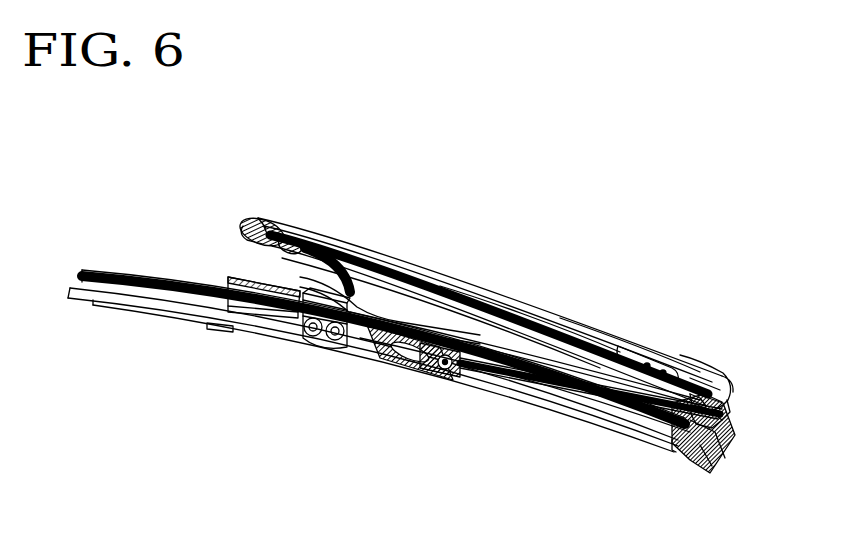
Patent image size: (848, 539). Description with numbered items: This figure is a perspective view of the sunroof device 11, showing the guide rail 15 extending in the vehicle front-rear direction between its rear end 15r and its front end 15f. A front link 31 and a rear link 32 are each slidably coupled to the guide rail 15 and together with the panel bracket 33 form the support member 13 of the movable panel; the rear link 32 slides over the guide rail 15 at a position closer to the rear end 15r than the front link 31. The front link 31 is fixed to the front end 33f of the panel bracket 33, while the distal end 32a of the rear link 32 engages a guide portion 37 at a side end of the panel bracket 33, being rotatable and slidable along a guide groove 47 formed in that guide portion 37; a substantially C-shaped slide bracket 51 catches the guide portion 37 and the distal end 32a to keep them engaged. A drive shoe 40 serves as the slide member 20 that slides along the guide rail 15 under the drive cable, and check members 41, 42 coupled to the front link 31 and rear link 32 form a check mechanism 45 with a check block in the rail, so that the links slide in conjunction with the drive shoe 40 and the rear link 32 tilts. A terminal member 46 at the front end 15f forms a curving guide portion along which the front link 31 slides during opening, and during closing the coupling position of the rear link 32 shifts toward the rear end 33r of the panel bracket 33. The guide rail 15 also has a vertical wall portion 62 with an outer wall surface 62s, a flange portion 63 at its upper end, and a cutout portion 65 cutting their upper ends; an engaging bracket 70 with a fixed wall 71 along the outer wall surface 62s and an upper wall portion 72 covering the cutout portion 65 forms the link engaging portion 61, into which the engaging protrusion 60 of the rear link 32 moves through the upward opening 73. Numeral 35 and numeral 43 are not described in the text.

The sunroof device 11 is at (133, 410).
The guide rail 15 is at (361, 330).
The rear end of the guide rail 15r is at (103, 268).
The front end of the guide rail 15f is at (670, 448).
The slide bracket 51 is at (197, 225).
The distal end of the rear link 32a is at (247, 230).
The engaging protrusion 60 is at (262, 214).
The rear end of the panel bracket 33r is at (270, 218).
The front end of the panel bracket 33f is at (717, 373).
The upper wall portion 72 is at (240, 279).
The link engaging portion 61 is at (310, 288).
The vertical wall portion 62 is at (220, 334).
The outer wall surface 62s is at (257, 303).
The rear link 32 is at (490, 294).
The support member 13 is at (547, 307).
The arm cover 35 is at (344, 247).
The flange portion 63 is at (373, 292).
The check member 42 is at (500, 425).
The check mechanism 45 is at (728, 418).
The panel bracket 33 is at (570, 315).
The drive shoe 40 is at (634, 335).
The slide member 20 is at (647, 364).
The front link 31 is at (723, 397).
The check member 41 is at (751, 412).
The terminal member 46 is at (713, 467).
The guide groove 47 is at (525, 379).
The guide portion 37 is at (493, 313).
The sleeve 43 is at (413, 377).
The engaging bracket 70 is at (391, 367).
The fixed wall 71 is at (357, 356).
The cutout portion 65 is at (289, 341).
The upward opening 73 is at (285, 312).